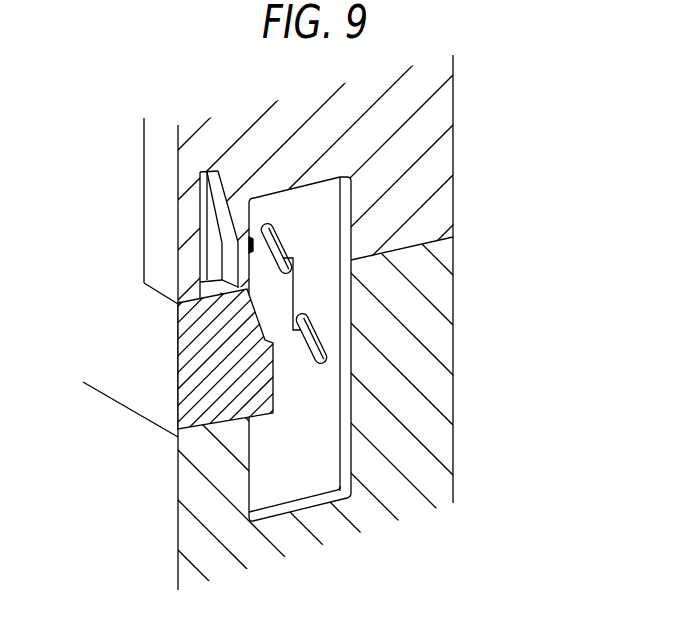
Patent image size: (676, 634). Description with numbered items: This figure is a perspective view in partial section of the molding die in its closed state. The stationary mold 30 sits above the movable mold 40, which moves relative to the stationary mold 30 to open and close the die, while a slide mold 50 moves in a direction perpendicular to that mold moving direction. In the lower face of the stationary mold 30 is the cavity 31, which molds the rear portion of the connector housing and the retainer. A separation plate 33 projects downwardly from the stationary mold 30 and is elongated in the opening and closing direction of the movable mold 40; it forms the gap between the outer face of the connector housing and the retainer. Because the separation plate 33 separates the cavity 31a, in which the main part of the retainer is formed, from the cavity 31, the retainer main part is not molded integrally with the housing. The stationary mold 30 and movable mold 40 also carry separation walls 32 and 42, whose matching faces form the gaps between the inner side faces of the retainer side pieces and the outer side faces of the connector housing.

The stationary mold 30 is at (472, 148).
The cavity 31 is at (291, 363).
The cavity 31a is at (240, 263).
The separation wall 32 is at (320, 293).
The separation plate 33 is at (252, 240).
The movable mold 40 is at (482, 435).
The separation wall 42 is at (273, 455).
The slide mold 50 is at (143, 392).